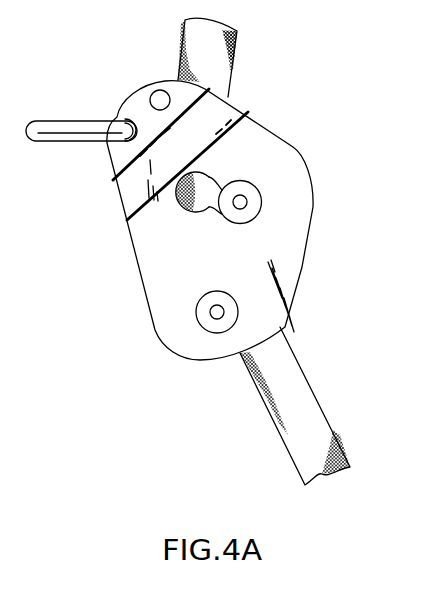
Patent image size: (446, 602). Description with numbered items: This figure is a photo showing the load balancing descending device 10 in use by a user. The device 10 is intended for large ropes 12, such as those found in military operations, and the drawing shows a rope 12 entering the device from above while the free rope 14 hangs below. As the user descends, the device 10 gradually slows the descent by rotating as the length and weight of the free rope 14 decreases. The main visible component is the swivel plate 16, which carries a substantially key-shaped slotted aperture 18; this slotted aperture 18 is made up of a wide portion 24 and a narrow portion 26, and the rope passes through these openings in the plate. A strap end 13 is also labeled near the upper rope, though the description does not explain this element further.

The load balancing descending device 10 is at (300, 106).
The rope 12 is at (165, 35).
The strap end portion 13 is at (232, 51).
The free rope 14 is at (325, 424).
The swivel plate 16 is at (293, 208).
The key-shaped slotted aperture 18 is at (227, 176).
The wide portion 24 is at (182, 209).
The narrow portion 26 is at (210, 203).